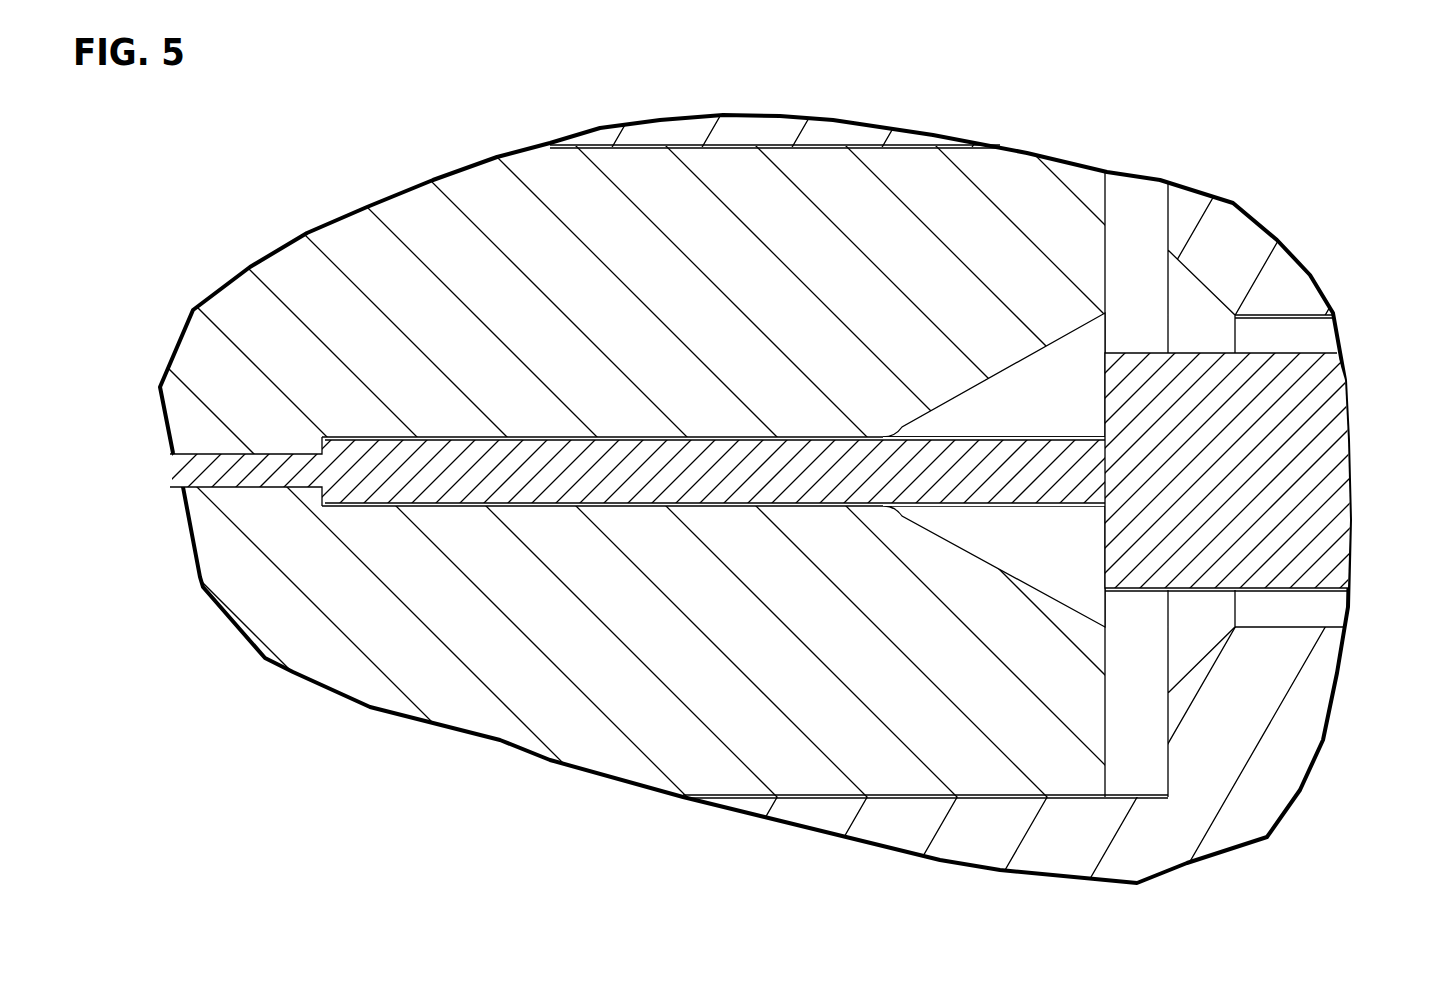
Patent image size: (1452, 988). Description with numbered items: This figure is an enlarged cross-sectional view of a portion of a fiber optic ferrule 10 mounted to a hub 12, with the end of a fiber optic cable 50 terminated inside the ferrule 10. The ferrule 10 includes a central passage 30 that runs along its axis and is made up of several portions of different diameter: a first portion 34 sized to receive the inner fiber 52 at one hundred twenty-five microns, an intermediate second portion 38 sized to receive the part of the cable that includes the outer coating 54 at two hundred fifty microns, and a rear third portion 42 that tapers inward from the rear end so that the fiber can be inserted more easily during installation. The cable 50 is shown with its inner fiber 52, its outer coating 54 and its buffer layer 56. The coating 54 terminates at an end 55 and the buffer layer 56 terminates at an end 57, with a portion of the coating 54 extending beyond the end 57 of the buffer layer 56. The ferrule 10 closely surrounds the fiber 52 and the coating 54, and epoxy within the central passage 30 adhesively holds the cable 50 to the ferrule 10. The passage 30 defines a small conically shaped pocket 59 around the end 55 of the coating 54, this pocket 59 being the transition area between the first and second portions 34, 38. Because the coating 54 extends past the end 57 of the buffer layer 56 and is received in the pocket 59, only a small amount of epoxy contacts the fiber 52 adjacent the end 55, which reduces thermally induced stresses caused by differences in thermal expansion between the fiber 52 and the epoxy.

The fiber optic ferrule 10 is at (640, 710).
The hub 12 is at (890, 832).
The central passage 30 is at (693, 437).
The first portion 34 is at (255, 488).
The second portion 38 is at (480, 437).
The third portion 42 is at (958, 402).
The fiber optic cable 50 is at (1318, 535).
The inner fiber 52 is at (252, 460).
The outer coating 54 is at (1032, 440).
The end of coating 55 is at (322, 448).
The buffer layer 56 is at (1262, 353).
The end of buffer layer 57 is at (1105, 558).
The conically shaped pocket 59 is at (322, 497).